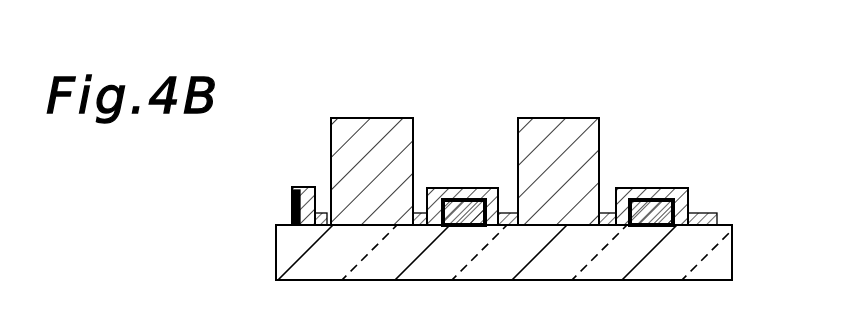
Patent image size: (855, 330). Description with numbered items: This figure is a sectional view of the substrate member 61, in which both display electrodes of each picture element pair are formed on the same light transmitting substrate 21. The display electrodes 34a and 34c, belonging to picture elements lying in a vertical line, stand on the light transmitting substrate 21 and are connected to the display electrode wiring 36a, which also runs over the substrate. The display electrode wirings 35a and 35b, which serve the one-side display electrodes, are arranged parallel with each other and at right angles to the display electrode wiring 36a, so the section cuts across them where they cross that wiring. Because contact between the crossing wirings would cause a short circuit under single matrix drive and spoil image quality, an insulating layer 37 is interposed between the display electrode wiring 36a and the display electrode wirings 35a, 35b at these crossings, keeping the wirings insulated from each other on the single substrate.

The light transmitting substrate 21 is at (717, 245).
The display electrode 34a is at (562, 127).
The display electrode 34c is at (377, 128).
The display electrode wiring 35a is at (692, 200).
The display electrode wiring 35b is at (489, 190).
The display electrode wiring 36a is at (310, 185).
The insulating layer 37 is at (292, 207).
The substrate member 61 is at (663, 92).